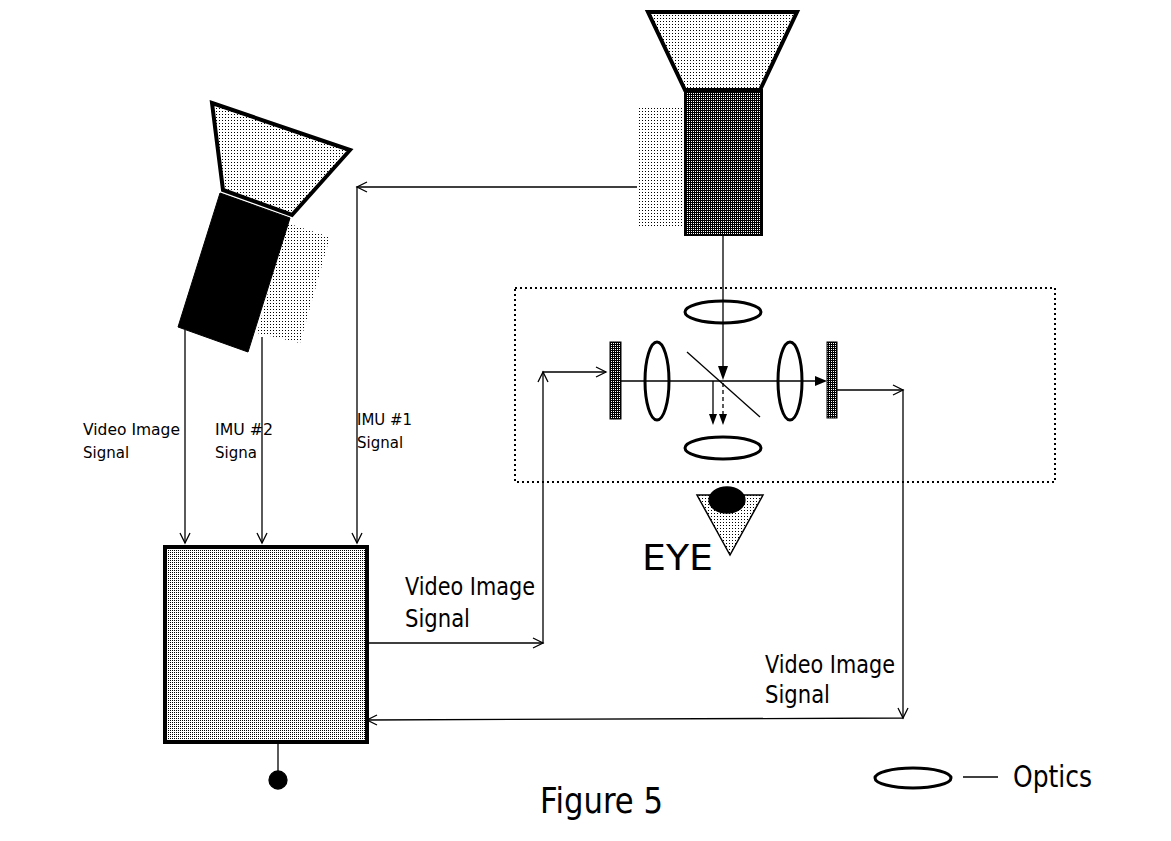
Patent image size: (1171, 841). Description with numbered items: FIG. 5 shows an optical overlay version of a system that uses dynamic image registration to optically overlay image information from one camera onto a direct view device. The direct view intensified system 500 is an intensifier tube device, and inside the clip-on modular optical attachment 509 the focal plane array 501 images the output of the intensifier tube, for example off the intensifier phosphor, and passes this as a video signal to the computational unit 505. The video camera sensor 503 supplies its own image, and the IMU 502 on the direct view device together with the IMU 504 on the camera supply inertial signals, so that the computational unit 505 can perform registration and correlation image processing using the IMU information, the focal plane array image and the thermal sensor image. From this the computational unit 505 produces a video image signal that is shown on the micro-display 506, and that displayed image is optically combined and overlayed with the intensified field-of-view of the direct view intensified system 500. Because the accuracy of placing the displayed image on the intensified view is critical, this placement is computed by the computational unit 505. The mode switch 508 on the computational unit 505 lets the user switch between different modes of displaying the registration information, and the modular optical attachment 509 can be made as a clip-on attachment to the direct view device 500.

The direct view intensified system 500 is at (737, 196).
The focal plane array 501 is at (830, 353).
The IMU 502 is at (631, 159).
The video camera sensor 503 is at (229, 227).
The IMU 504 is at (296, 300).
The computational unit 505 is at (212, 565).
The micro-display 506 is at (607, 365).
The mode switch 508 is at (276, 772).
The modular optical attachment 509 is at (1057, 355).